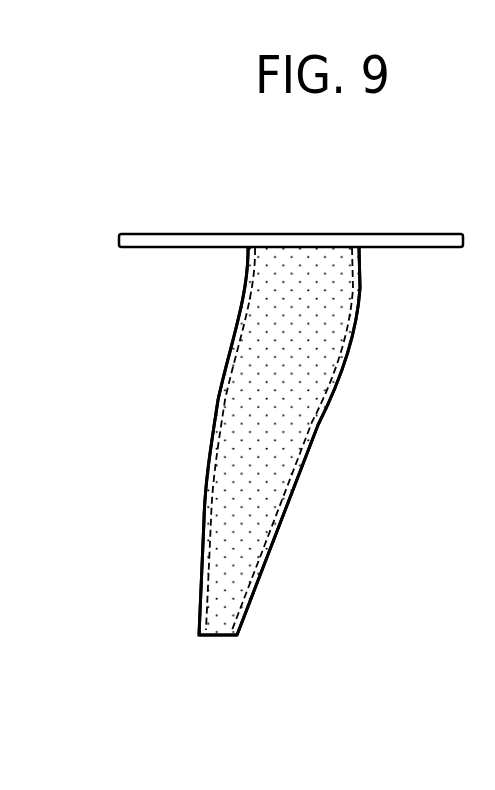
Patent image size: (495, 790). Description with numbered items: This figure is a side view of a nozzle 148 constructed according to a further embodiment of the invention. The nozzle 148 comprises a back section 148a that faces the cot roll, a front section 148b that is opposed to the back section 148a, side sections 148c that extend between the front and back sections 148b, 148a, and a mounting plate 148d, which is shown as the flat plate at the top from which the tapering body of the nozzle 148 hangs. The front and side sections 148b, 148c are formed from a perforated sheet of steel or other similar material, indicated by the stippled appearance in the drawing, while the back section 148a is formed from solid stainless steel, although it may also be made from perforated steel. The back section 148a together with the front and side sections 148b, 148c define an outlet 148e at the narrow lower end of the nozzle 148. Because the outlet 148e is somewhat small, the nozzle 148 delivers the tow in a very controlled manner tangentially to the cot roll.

The nozzle 148 is at (327, 305).
The back section 148a is at (330, 401).
The front section 148b is at (200, 582).
The side sections 148c is at (230, 487).
The mounting plate 148d is at (393, 237).
The outlet 148e is at (198, 642).